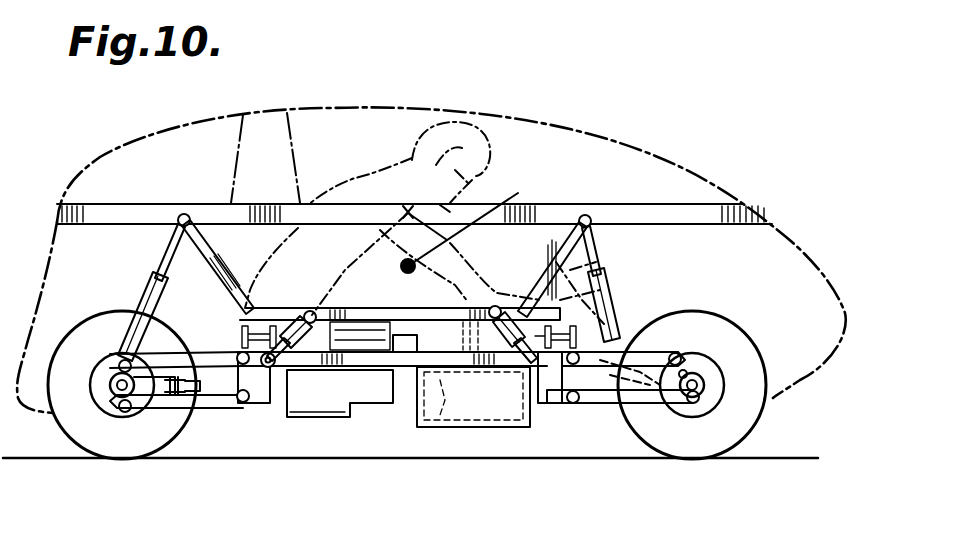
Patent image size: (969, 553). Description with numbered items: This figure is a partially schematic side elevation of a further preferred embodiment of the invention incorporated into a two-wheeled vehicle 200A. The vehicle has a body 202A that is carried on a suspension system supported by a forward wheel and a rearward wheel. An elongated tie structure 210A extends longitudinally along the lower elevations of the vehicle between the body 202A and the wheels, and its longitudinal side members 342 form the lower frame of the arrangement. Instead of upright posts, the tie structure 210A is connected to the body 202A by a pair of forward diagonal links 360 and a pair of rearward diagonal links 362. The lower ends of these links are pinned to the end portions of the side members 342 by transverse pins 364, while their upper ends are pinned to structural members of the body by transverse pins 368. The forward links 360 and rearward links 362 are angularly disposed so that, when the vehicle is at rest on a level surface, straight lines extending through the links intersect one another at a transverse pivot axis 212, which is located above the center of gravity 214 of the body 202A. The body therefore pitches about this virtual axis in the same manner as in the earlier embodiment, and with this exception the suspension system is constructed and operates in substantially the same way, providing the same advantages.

The vehicle 200A is at (532, 70).
The body 202A is at (591, 122).
The transverse pivot axis 212 is at (408, 212).
The center of gravity 214 is at (518, 193).
The rearward diagonal links 362 is at (278, 350).
The transverse pins 368 is at (332, 312).
The transverse pins 364 is at (262, 403).
The longitudinal side members 342 is at (360, 360).
The tie structure 210A is at (407, 370).
The forward diagonal links 360 is at (503, 353).